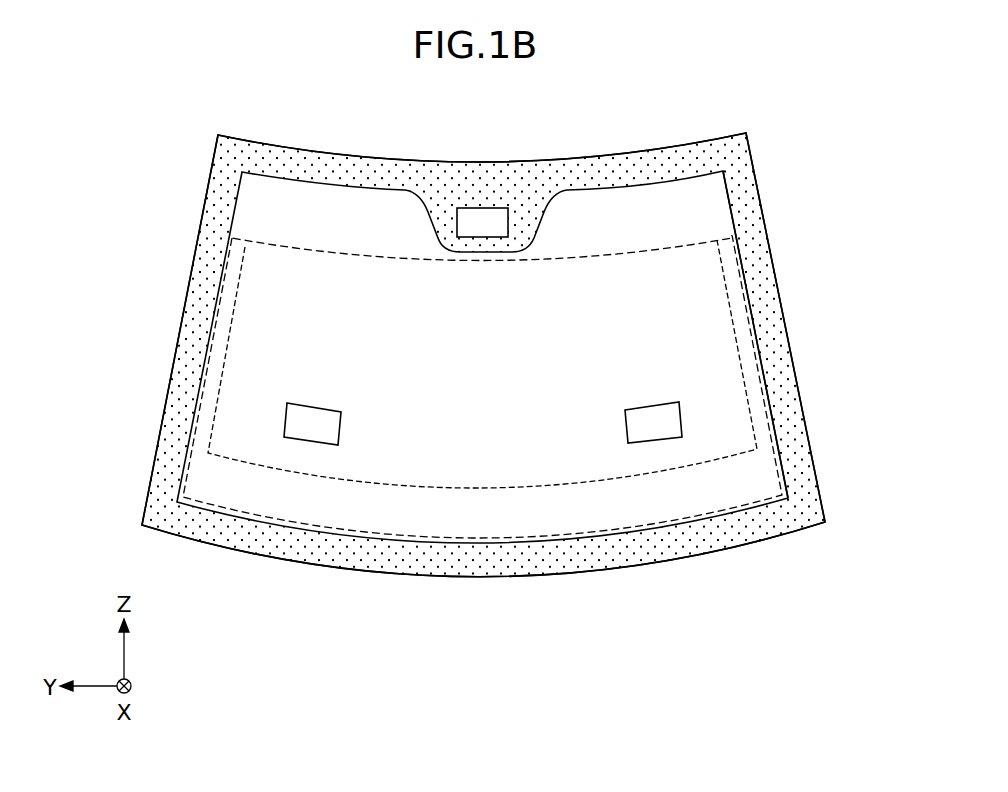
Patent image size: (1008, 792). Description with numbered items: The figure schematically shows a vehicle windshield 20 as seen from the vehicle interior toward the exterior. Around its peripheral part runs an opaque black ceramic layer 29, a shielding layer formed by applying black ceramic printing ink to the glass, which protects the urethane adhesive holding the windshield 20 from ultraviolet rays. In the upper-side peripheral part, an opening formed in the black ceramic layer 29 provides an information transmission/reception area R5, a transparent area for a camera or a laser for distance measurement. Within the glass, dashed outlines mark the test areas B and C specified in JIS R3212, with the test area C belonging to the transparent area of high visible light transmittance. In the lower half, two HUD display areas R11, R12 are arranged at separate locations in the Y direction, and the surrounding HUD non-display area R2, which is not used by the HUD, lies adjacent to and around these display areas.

The windshield 20 is at (147, 130).
The black ceramic layer 29 is at (662, 153).
The test area C is at (722, 240).
The test area B is at (727, 295).
The information transmission/reception area R5 is at (483, 218).
The HUD display area R11 is at (310, 432).
The HUD display area R12 is at (653, 430).
The HUD non-display area R2 is at (775, 480).